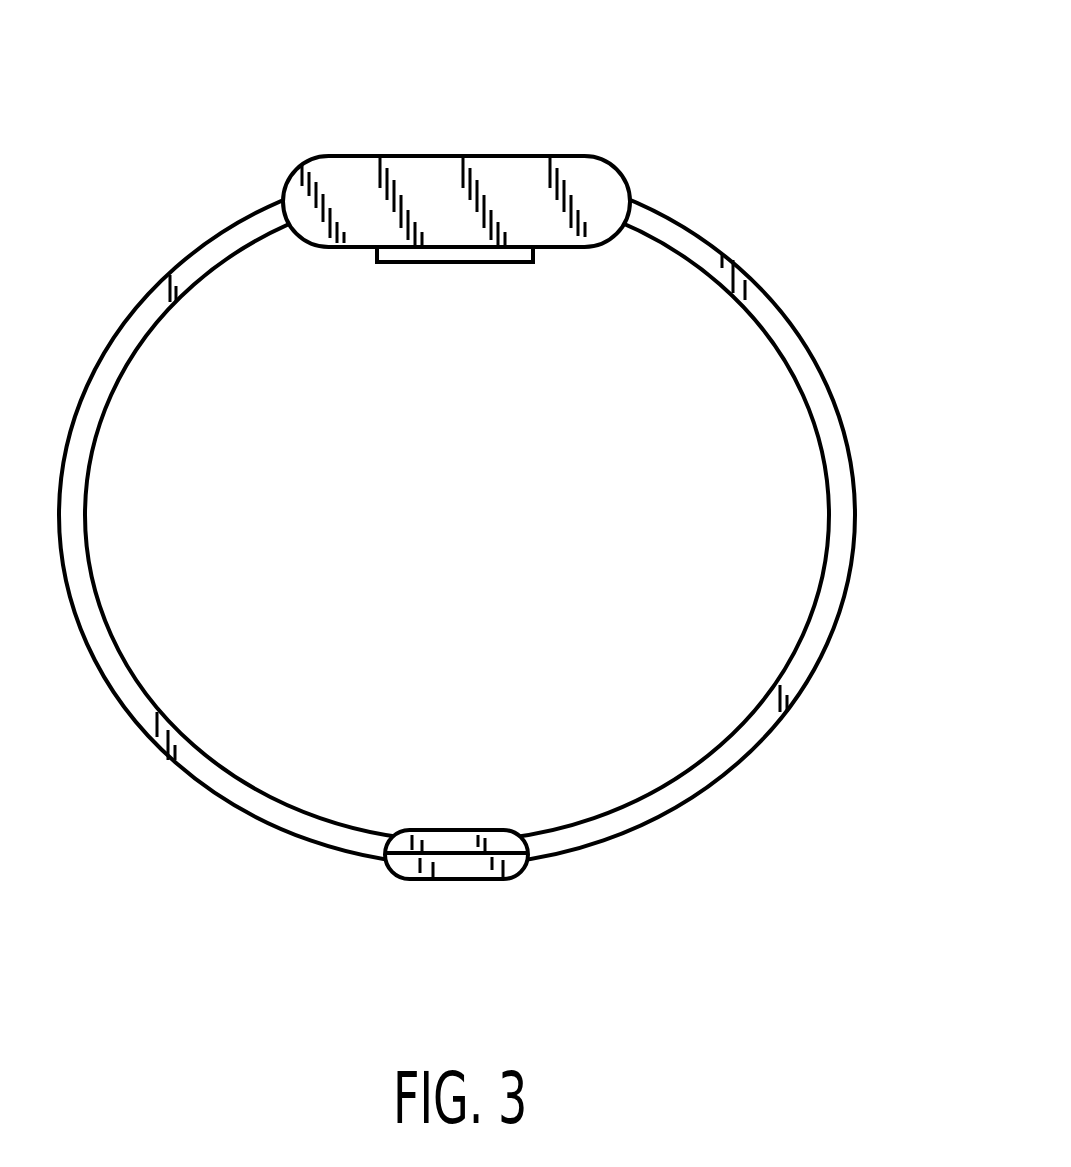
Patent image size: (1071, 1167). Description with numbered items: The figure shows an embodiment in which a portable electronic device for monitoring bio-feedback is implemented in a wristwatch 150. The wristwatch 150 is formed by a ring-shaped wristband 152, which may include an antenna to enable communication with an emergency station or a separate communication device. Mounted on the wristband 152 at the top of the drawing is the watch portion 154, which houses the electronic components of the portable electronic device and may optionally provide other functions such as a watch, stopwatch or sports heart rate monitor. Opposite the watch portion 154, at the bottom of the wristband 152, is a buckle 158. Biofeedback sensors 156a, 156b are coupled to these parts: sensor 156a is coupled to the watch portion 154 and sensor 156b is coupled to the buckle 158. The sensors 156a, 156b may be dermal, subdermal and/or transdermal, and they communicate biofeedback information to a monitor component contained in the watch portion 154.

The wristwatch 150 is at (630, 82).
The wristband 152 is at (805, 362).
The watch portion 154 is at (456, 156).
The biofeedback sensor 156a is at (458, 252).
The biofeedback sensor 156b is at (458, 842).
The buckle 158 is at (458, 880).